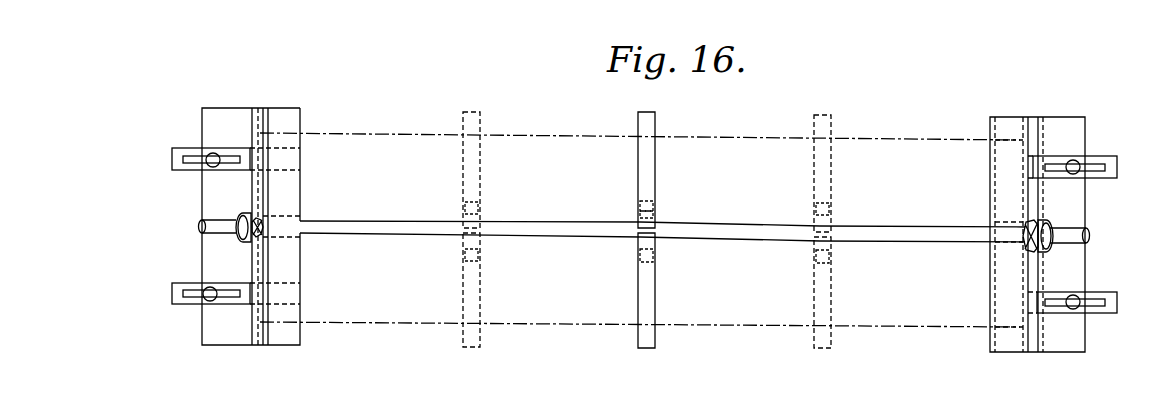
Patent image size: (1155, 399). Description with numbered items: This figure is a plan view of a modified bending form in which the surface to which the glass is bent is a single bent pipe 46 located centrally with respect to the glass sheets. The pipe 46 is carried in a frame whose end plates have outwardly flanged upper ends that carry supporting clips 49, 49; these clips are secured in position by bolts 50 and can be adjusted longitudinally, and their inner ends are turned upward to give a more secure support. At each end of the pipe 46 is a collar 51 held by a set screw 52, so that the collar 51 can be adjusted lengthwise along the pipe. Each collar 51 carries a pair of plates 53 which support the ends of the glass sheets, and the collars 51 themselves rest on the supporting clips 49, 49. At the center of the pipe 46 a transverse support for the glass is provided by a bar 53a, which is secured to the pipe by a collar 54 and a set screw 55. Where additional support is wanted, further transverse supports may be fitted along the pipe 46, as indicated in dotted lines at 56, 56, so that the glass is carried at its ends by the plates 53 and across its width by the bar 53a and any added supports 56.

The bent pipe 46 is at (890, 232).
The supporting clip 49 is at (172, 298).
The bolt 50 is at (212, 158).
The collar 51 is at (240, 214).
The set screw 52 is at (245, 243).
The plate 53 is at (286, 120).
The bar 53a is at (650, 183).
The collar 54 is at (656, 215).
The set screw 55 is at (652, 201).
The additional transverse support 56 is at (478, 154).